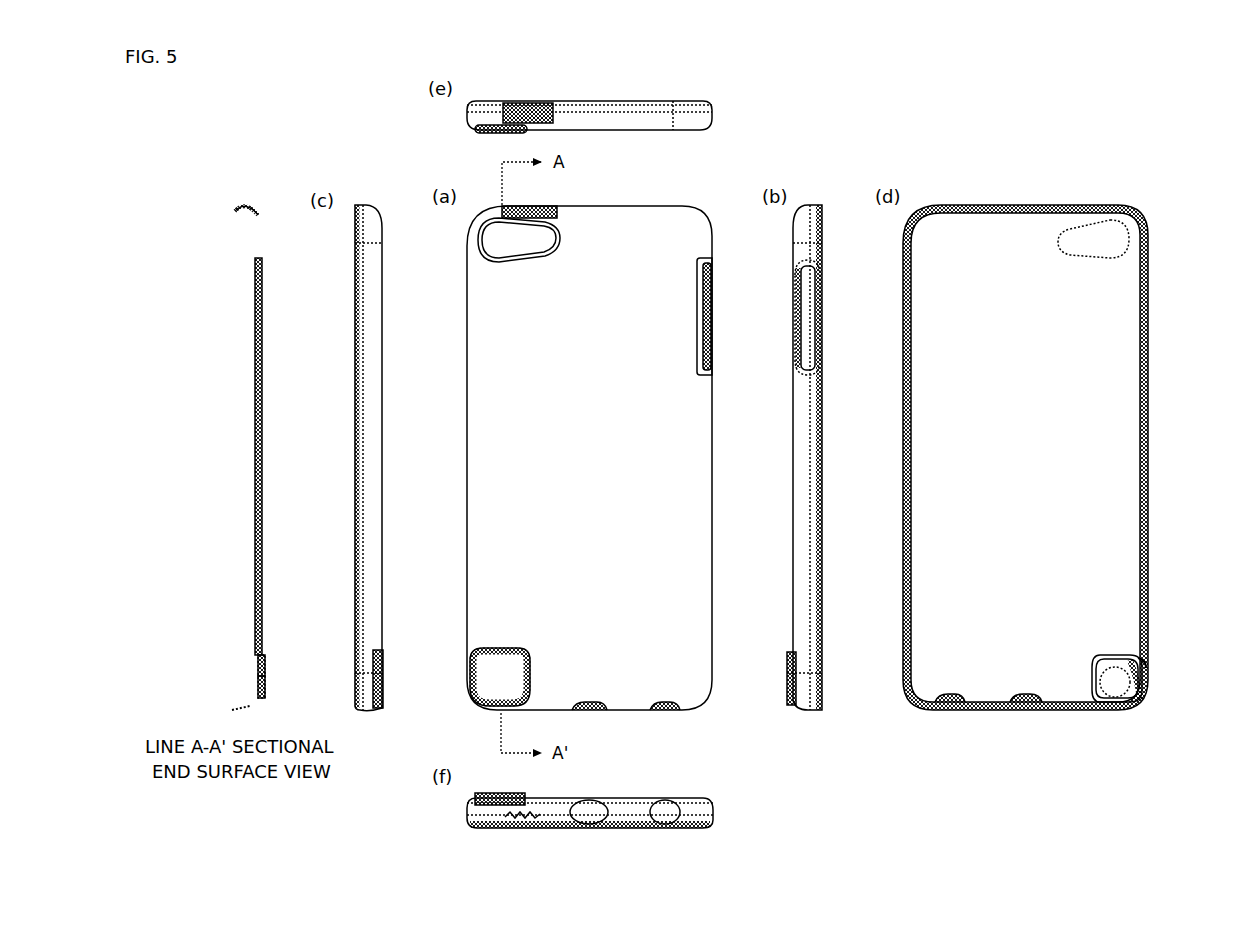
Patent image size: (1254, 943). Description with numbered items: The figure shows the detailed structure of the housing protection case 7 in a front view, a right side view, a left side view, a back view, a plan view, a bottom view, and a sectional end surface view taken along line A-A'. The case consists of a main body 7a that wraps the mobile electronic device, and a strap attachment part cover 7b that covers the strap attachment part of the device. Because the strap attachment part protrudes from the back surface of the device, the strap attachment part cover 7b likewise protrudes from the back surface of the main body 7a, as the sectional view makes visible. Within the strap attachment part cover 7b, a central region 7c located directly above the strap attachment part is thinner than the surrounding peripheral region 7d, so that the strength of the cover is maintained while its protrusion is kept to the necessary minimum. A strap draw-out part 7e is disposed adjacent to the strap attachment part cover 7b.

The housing protection case 7 is at (232, 183).
The main body 7a is at (262, 548).
The strap attachment part cover 7b is at (313, 620).
The central region 7c is at (266, 680).
The peripheral region 7d is at (264, 657).
The strap draw-out part 7e is at (249, 699).